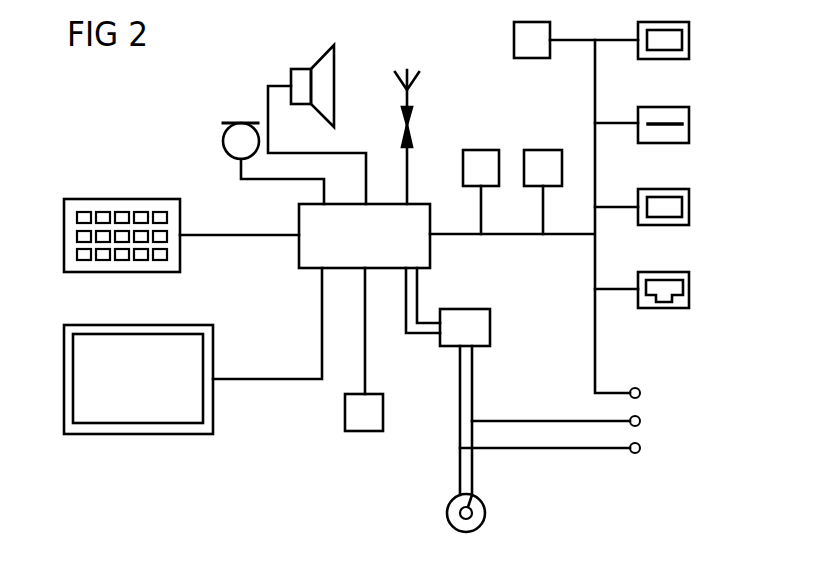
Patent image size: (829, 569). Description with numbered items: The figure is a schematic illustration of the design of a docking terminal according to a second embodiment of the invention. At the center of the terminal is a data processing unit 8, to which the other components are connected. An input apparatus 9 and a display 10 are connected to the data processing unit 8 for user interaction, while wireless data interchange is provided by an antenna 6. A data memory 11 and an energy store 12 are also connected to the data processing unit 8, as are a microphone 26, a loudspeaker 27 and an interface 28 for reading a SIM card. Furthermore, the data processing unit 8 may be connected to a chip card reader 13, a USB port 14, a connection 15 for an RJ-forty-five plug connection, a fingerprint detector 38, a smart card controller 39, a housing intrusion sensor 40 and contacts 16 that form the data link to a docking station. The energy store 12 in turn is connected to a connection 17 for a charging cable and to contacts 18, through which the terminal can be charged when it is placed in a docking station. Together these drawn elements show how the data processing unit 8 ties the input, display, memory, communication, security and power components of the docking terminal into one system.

The antenna 6 is at (398, 82).
The data processing unit 8 is at (432, 248).
The input apparatus 9 is at (120, 199).
The display 10 is at (137, 435).
The data memory 11 is at (364, 432).
The energy store 12 is at (490, 327).
The chip card reader 13 is at (689, 123).
The USB port 14 is at (689, 207).
The connection for an RJ-45 plug connection 15 is at (689, 289).
The contacts 16 is at (640, 393).
The connection for a charging cable 17 is at (447, 513).
The contacts 18 is at (640, 421).
The microphone 26 is at (239, 122).
The loudspeaker 27 is at (300, 69).
The interface 28 is at (689, 40).
The fingerprint detector 38 is at (481, 150).
The smart card controller 39 is at (514, 40).
The housing intrusion sensor 40 is at (543, 150).